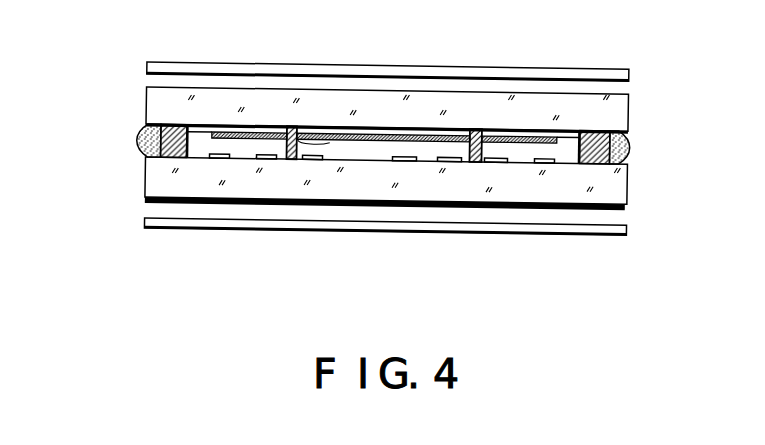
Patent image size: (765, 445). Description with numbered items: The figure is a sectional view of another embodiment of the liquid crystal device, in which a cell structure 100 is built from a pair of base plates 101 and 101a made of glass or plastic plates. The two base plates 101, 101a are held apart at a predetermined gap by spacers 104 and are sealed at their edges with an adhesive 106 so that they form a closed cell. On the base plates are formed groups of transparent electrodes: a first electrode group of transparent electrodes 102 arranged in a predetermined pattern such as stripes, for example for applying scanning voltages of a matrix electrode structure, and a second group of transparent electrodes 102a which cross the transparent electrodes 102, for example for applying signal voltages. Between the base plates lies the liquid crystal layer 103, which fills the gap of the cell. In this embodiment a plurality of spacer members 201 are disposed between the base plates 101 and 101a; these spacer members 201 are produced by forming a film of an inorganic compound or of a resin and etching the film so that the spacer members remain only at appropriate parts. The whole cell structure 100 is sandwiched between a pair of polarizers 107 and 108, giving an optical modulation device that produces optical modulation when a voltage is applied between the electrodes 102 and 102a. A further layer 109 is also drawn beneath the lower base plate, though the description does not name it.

The cell structure 100 is at (648, 125).
The base plate 101 is at (153, 183).
The base plate 101a is at (152, 108).
The transparent electrodes 102 is at (405, 160).
The transparent electrodes 102a is at (452, 129).
The liquid crystal layer 103 is at (265, 131).
The spacers 104 is at (175, 162).
The adhesive 106 is at (138, 140).
The polarizer 107 is at (628, 231).
The polarizer 108 is at (628, 72).
The reflector layer 109 is at (622, 205).
The spacer members 201 is at (330, 135).